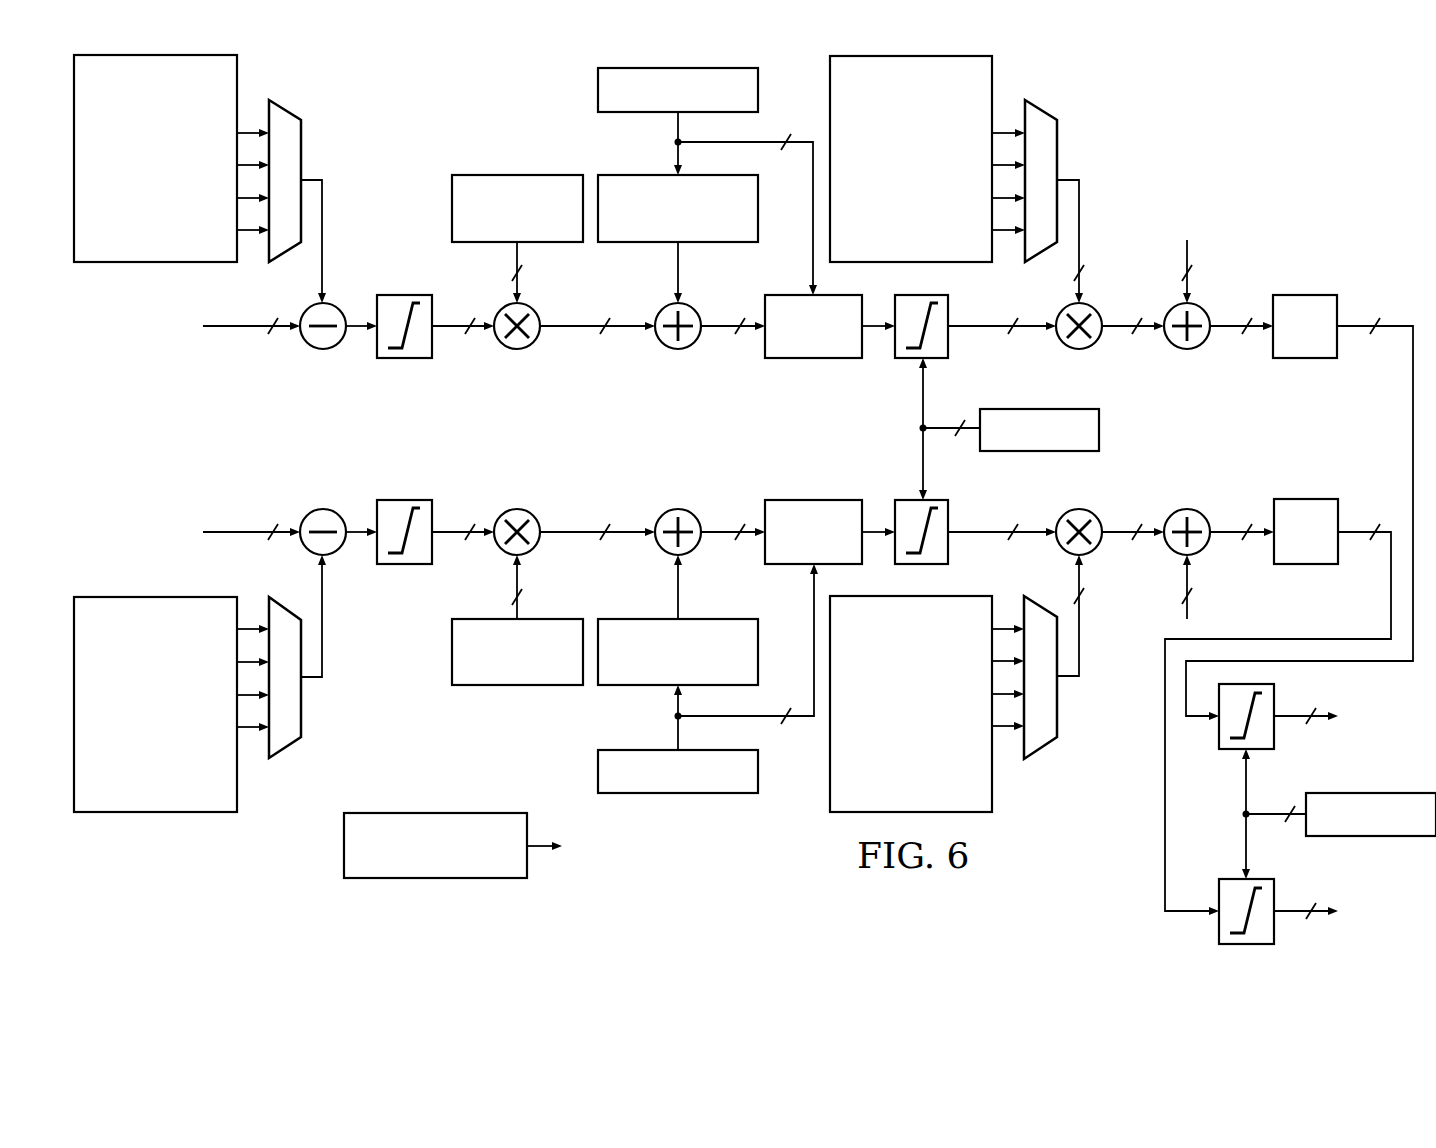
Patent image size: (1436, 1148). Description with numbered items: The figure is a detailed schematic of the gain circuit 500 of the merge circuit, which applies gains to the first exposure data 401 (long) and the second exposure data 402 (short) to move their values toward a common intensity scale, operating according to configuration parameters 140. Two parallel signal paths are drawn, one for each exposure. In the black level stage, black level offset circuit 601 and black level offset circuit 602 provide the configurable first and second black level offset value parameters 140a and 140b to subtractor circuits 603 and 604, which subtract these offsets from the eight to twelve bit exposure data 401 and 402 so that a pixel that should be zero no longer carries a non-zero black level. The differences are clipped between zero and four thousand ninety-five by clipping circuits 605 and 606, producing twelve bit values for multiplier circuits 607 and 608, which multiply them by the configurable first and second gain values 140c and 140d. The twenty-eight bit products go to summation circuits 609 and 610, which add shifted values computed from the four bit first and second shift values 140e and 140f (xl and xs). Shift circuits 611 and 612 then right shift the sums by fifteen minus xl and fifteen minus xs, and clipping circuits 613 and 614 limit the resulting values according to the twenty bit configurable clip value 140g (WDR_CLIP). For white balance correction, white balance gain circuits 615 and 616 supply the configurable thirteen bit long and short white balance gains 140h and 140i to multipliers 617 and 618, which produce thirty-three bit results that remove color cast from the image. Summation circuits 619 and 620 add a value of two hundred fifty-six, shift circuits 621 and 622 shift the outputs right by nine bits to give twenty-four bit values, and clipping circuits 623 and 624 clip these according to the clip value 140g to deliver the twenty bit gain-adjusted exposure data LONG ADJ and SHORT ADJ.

The gain circuit 500 is at (1323, 110).
The configuration parameters 140 is at (430, 878).
The first black level offset value parameter 140a is at (237, 84).
The second black level offset value parameter 140b is at (157, 812).
The first gain value 140c is at (507, 175).
The second gain value 140d is at (507, 685).
The first shift value 140e is at (598, 90).
The second shift value 140f is at (669, 793).
The clip value 140g is at (1099, 420).
The long white balance gain 140h is at (992, 84).
The short white balance gain 140i is at (992, 784).
The first exposure data 401 is at (255, 330).
The second exposure data 402 is at (255, 535).
The black level offset circuit 601 is at (305, 148).
The black level offset circuit 602 is at (301, 710).
The subtractor circuit 603 is at (315, 348).
The subtractor circuit 604 is at (317, 510).
The clipping circuit 605 is at (405, 362).
The clipping circuit 606 is at (405, 565).
The multiplier circuit 607 is at (510, 348).
The multiplier circuit 608 is at (511, 511).
The summation circuit 609 is at (670, 348).
The summation circuit 610 is at (670, 511).
The shift circuit 611 is at (825, 360).
The shift circuit 612 is at (824, 498).
The clipping circuit 613 is at (948, 342).
The clipping circuit 614 is at (948, 548).
The white balance gain circuit 615 is at (1060, 148).
The white balance gain circuit 616 is at (1057, 709).
The multiplier 617 is at (1085, 350).
The multiplier 618 is at (1085, 512).
The summation circuit 619 is at (1192, 350).
The summation circuit 620 is at (1198, 512).
The shift circuit 621 is at (1305, 293).
The shift circuit 622 is at (1306, 564).
The clipping circuit 623 is at (1274, 735).
The clipping circuit 624 is at (1274, 930).